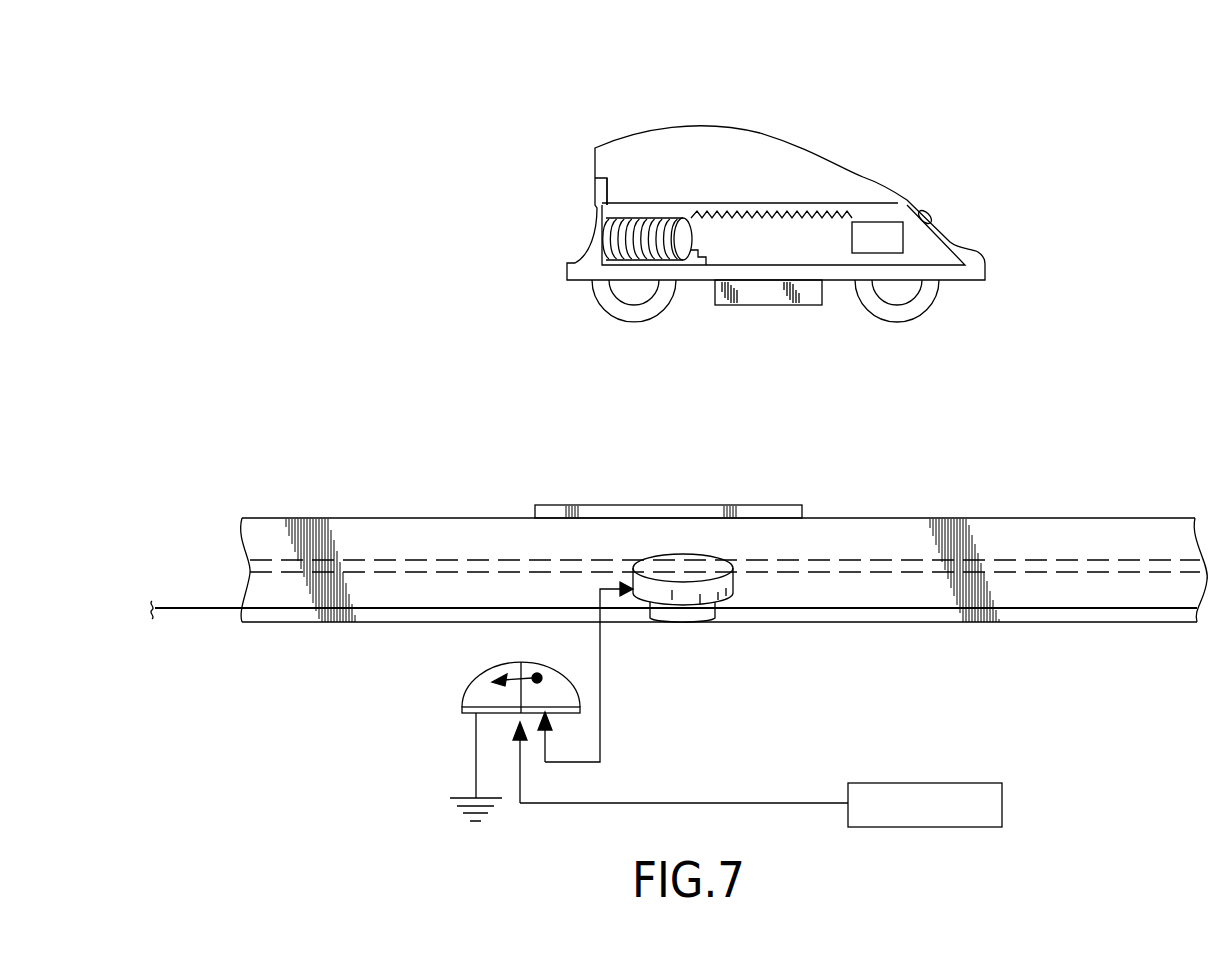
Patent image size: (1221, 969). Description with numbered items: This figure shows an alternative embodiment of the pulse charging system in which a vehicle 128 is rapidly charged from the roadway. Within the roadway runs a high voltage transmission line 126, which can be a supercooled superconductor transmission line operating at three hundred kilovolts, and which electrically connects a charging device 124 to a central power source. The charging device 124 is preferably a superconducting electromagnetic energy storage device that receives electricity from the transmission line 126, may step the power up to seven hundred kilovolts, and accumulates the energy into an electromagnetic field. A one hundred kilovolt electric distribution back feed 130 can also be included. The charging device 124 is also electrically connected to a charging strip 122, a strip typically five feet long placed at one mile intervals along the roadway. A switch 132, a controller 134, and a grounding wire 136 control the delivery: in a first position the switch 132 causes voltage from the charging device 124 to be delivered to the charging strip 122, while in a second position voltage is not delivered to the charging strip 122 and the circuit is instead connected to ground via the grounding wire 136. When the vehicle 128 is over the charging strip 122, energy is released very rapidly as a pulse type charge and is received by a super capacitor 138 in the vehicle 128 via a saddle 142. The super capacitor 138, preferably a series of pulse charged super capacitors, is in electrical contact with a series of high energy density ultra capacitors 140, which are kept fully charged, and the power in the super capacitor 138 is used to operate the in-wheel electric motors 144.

The charging strip 122 is at (600, 505).
The charging device 124 is at (691, 562).
The high voltage transmission line 126 is at (266, 552).
The vehicle 128 is at (782, 135).
The electric distribution back feed 130 is at (288, 618).
The switch 132 is at (466, 692).
The controller 134 is at (917, 783).
The grounding wire 136 is at (476, 771).
The super capacitor 138 is at (596, 201).
The ultra capacitors 140 is at (903, 200).
The saddle 142 is at (763, 305).
The in-wheel electric motors 144 is at (607, 265).